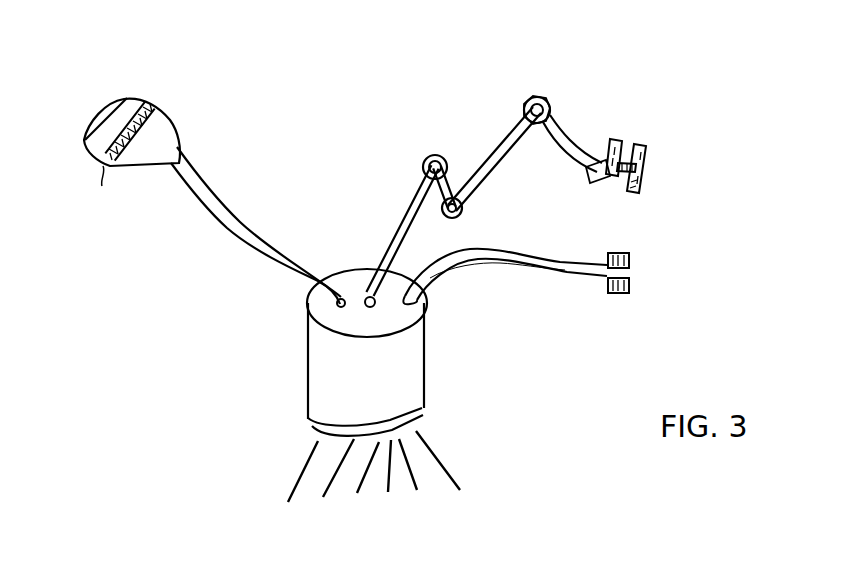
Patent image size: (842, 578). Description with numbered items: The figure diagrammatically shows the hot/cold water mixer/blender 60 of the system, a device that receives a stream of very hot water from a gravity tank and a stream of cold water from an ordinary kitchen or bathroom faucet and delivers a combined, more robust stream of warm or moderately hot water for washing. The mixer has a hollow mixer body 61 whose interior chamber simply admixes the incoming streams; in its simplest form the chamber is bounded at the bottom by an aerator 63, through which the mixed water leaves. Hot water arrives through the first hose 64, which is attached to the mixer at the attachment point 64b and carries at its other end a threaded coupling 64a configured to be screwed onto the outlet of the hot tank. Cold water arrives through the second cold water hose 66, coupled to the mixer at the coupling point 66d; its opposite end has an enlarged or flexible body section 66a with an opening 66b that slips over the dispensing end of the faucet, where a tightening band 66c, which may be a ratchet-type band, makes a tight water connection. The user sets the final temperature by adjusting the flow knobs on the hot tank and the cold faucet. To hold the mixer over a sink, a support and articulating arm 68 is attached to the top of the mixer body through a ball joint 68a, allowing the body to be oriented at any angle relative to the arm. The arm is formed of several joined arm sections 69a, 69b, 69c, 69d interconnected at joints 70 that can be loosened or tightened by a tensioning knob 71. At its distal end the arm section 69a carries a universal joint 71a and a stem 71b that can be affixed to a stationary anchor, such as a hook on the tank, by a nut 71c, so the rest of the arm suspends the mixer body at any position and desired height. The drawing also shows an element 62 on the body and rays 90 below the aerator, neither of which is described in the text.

The water mixer/blender 60 is at (251, 359).
The mixer body 61 is at (330, 369).
The base top 62 is at (413, 362).
The aerator 63 is at (425, 415).
The first hose 64 is at (550, 262).
The threaded coupling 64a is at (621, 247).
The first hose attachment point 64b is at (428, 300).
The second cold water hose 66 is at (243, 224).
The enlarged section 66a is at (157, 128).
The opening 66b is at (104, 117).
The tightening band 66c is at (110, 163).
The second hose coupling point 66d is at (310, 308).
The support and articulating arm 68 is at (491, 156).
The ball joint 68a is at (364, 272).
The arm section 69a is at (565, 135).
The arm section 69b is at (490, 168).
The arm section 69c is at (432, 205).
The arm section 69d is at (403, 217).
The joints 70 is at (540, 97).
The tensioning knob 71 is at (437, 157).
The universal joint 71a is at (636, 137).
The stem 71b is at (648, 152).
The nut 71c is at (636, 187).
The light rays 90 is at (447, 468).